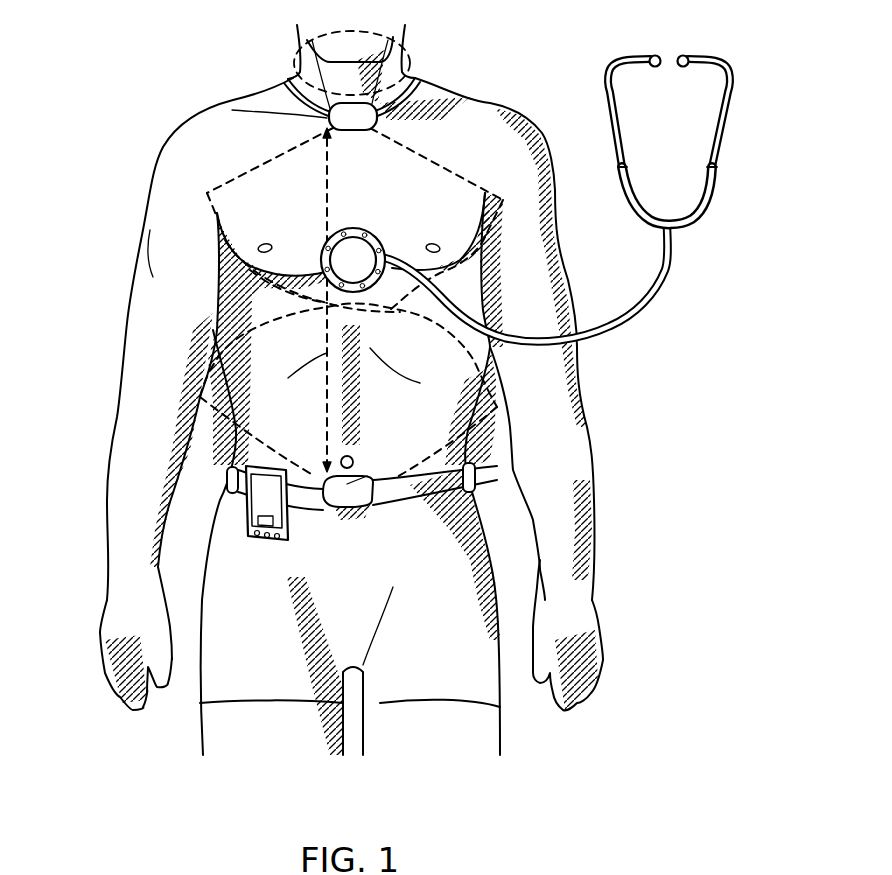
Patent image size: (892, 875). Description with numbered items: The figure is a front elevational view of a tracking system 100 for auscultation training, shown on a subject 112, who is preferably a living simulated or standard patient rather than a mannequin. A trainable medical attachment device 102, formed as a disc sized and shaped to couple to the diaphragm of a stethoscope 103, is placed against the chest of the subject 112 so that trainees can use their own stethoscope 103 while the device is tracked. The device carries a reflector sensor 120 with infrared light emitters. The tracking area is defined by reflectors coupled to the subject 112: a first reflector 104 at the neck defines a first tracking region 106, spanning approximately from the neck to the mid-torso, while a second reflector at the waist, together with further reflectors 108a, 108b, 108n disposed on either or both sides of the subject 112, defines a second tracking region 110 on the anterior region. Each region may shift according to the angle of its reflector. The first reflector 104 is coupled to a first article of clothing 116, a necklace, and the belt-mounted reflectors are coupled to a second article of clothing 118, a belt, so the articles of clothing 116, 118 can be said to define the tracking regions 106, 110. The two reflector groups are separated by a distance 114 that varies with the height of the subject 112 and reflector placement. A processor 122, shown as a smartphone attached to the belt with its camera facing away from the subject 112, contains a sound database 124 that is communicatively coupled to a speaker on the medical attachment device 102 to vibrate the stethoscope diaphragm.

The tracking system 100 is at (372, 795).
The medical attachment device 102 is at (322, 253).
The stethoscope 103 is at (738, 137).
The first reflector 104 is at (329, 113).
The first tracking region 106 is at (262, 160).
The reflector 108a is at (375, 478).
The reflector 108b is at (227, 468).
The reflector 108n is at (475, 465).
The second tracking region 110 is at (237, 348).
The subject 112 is at (484, 68).
The distance 114 is at (327, 377).
The first article of clothing 116 is at (290, 79).
The second article of clothing 118 is at (375, 478).
The reflector sensor 120 is at (318, 273).
The processor 122 is at (248, 503).
The sound database 124 is at (250, 528).